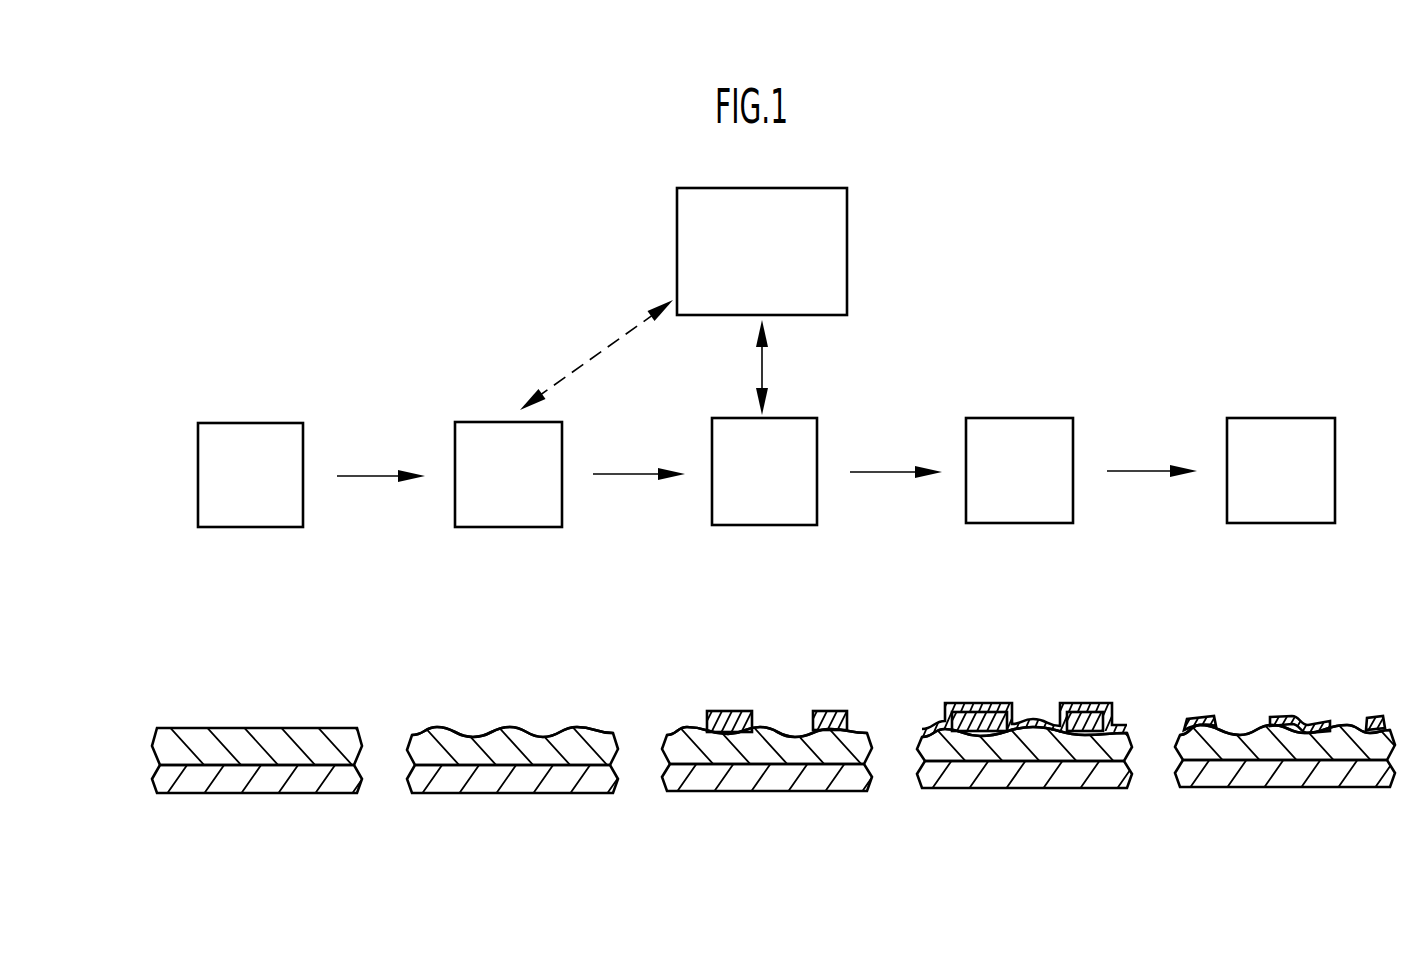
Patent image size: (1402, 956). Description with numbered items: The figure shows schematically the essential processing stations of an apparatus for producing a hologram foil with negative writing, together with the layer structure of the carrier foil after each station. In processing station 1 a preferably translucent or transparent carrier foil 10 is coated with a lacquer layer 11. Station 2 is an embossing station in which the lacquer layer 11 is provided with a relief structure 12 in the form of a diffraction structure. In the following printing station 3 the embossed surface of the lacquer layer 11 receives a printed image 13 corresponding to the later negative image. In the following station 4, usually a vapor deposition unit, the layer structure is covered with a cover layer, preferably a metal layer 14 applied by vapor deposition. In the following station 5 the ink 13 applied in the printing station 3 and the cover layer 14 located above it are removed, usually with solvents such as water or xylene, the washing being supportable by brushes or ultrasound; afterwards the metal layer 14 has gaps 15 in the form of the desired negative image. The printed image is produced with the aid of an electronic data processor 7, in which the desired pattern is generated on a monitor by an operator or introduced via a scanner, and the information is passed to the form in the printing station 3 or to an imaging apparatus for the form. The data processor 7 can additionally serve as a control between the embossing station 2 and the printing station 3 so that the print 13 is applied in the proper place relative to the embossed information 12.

The processing station 1 is at (237, 493).
The embossing station 2 is at (496, 493).
The printing station 3 is at (752, 493).
The vapor deposition unit 4 is at (1008, 493).
The washing station 5 is at (1271, 493).
The electronic data processor 7 is at (743, 264).
The carrier foil 10 is at (776, 804).
The lacquer layer 11 is at (773, 703).
The relief structure 12 is at (769, 689).
The printed image 13 is at (905, 693).
The metal layer 14 is at (1154, 701).
The gaps 15 is at (1285, 691).